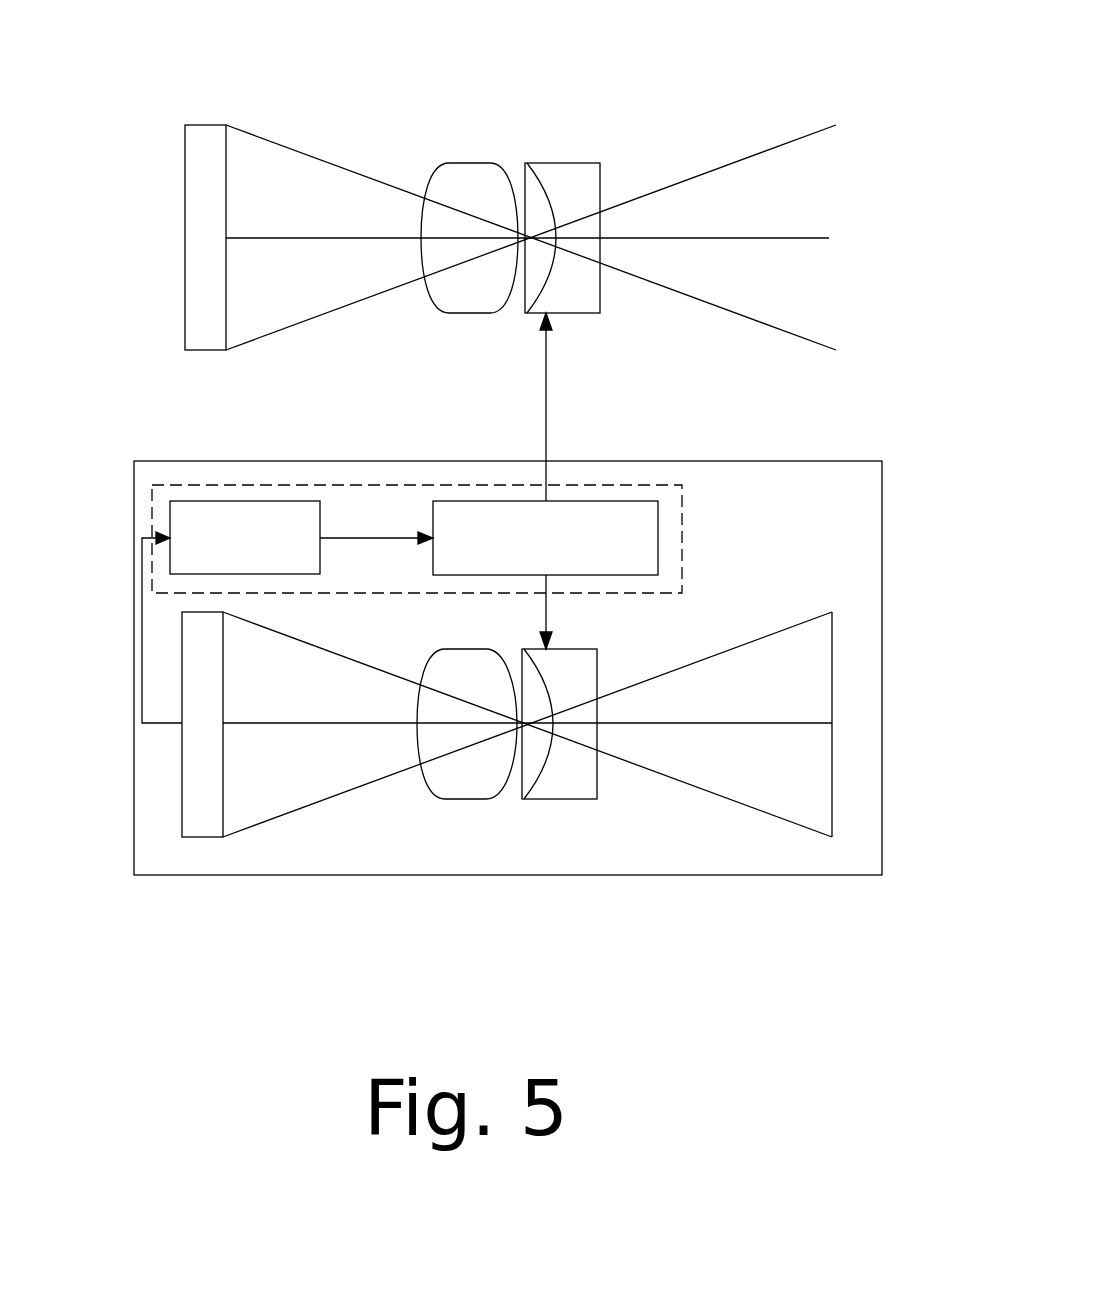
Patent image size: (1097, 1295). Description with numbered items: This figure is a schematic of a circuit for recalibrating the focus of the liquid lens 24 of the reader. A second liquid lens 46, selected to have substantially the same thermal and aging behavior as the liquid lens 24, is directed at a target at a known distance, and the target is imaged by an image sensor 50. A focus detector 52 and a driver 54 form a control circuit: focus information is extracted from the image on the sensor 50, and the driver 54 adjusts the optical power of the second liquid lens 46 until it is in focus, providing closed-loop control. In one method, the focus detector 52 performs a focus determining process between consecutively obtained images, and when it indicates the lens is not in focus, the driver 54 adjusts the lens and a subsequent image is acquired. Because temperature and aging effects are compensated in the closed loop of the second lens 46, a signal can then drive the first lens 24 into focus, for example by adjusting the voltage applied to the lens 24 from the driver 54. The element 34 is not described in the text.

The image sensor 34 is at (207, 125).
The liquid lens 24 is at (510, 148).
The focus detector 52 is at (227, 501).
The driver 54 is at (582, 501).
The image sensor 50 is at (205, 817).
The second liquid lens 46 is at (562, 808).